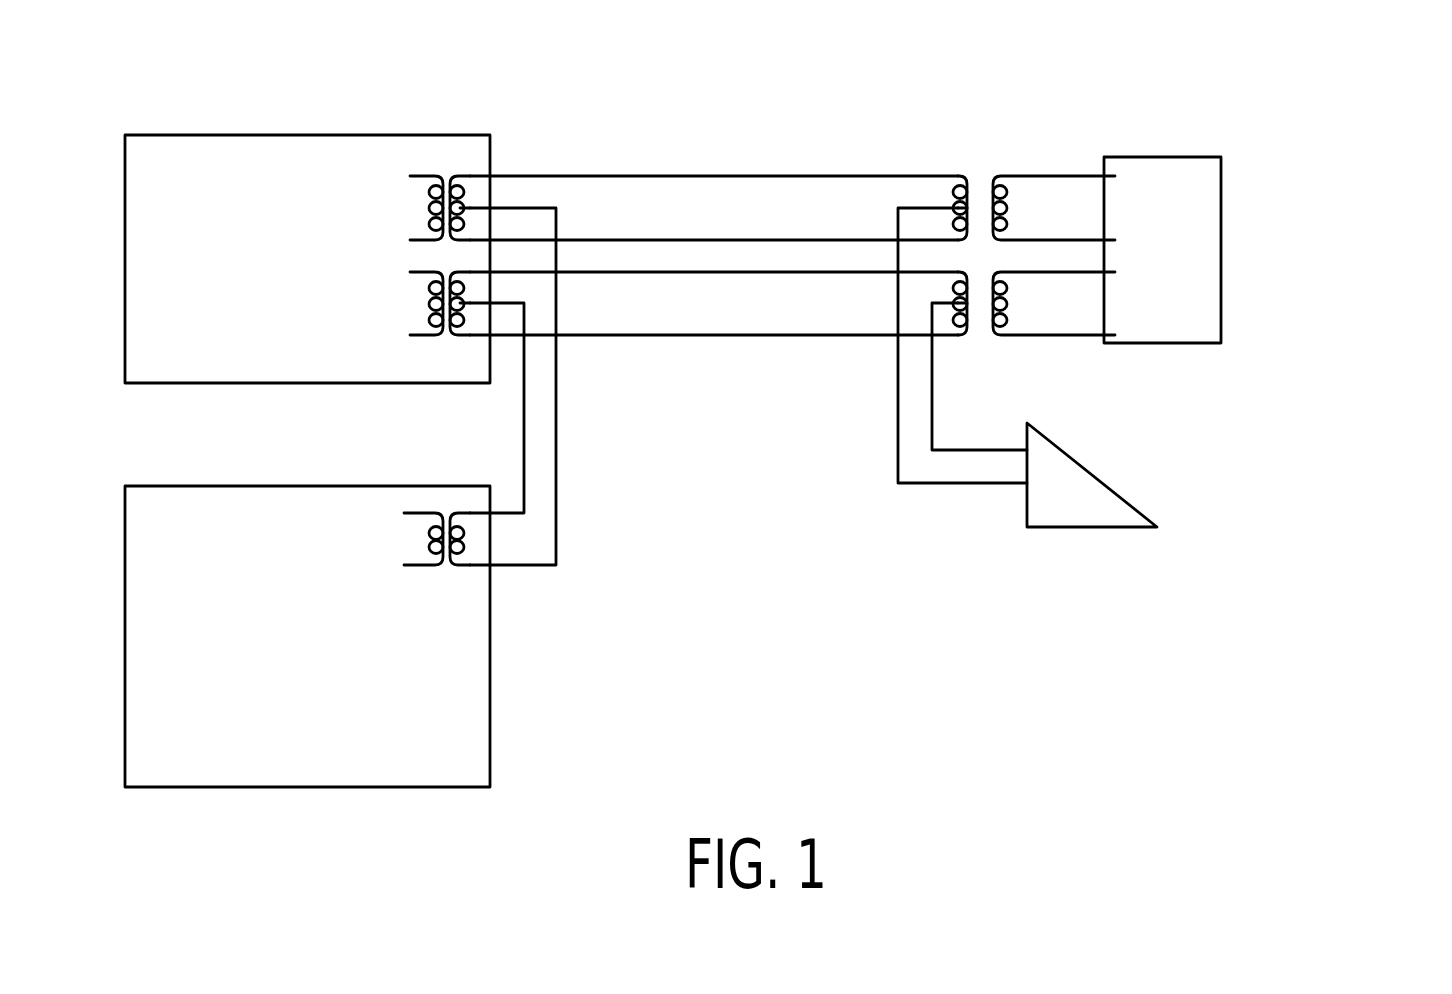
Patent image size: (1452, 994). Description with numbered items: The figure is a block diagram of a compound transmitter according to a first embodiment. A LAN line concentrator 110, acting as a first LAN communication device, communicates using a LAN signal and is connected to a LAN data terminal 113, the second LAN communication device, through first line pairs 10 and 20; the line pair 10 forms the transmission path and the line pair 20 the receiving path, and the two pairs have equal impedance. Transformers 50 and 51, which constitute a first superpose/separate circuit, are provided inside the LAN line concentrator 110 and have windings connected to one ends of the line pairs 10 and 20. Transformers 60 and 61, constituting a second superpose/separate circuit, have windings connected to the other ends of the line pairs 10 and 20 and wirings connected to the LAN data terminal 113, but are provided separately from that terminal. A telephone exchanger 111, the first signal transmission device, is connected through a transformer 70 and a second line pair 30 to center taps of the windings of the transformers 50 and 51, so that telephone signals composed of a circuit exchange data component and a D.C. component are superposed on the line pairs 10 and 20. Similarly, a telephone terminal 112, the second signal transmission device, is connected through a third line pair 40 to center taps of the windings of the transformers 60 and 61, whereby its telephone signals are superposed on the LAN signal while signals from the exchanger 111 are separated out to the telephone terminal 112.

The line pair 10 is at (750, 238).
The line pair 20 is at (738, 271).
The second line pair 30 is at (527, 490).
The third line pair 40 is at (938, 452).
The transformer 50 is at (448, 178).
The transformer 51 is at (447, 337).
The transformer 60 is at (978, 183).
The transformer 61 is at (978, 323).
The transformer 70 is at (450, 566).
The LAN line concentrator 110 is at (220, 168).
The telephone exchanger 111 is at (252, 521).
The telephone terminal 112 is at (1087, 487).
The LAN data terminal 113 is at (1167, 190).